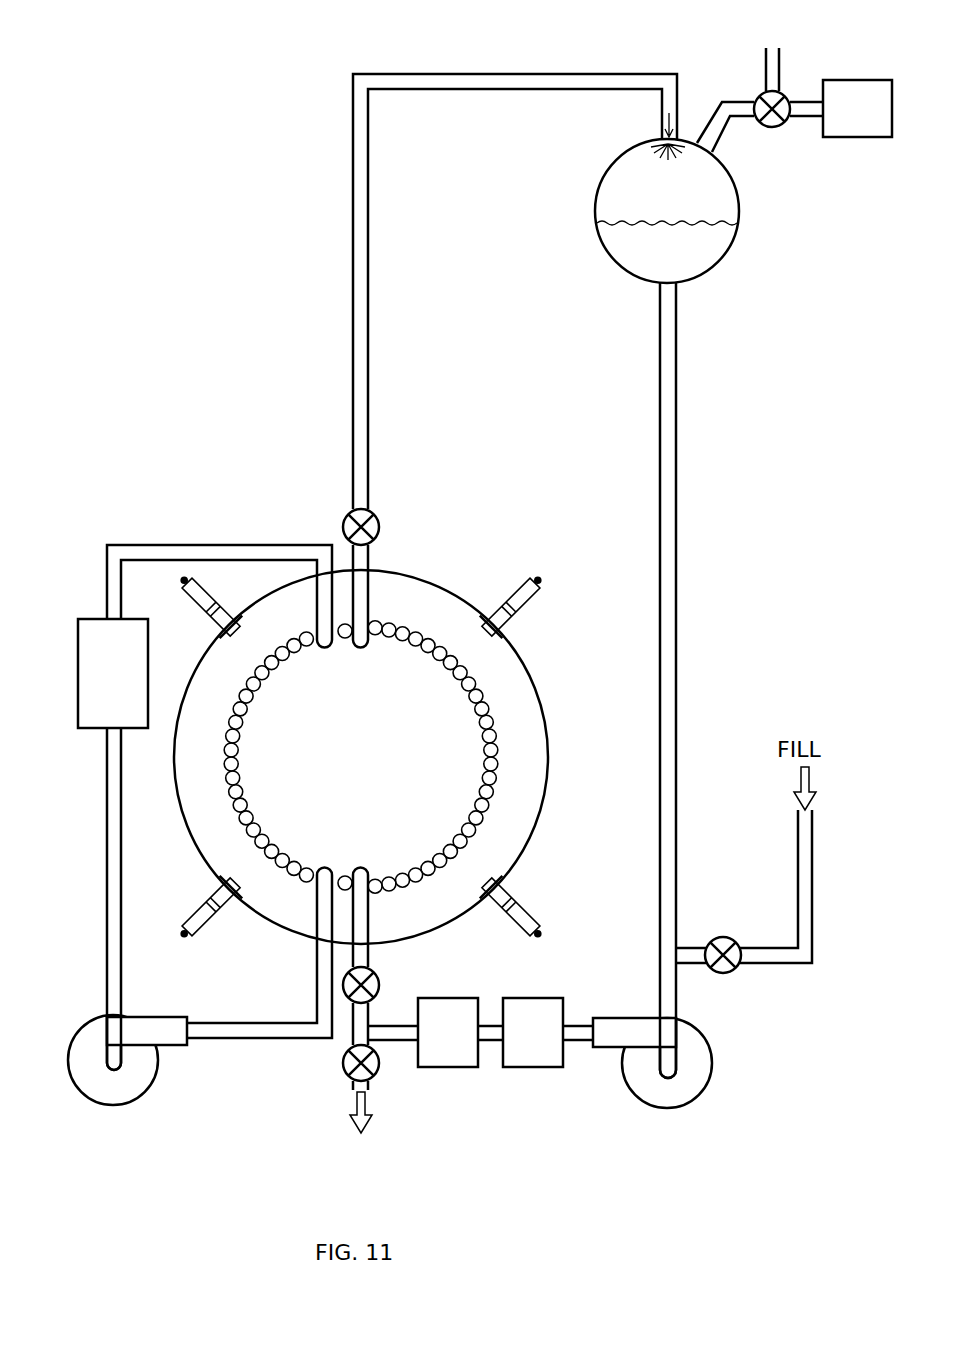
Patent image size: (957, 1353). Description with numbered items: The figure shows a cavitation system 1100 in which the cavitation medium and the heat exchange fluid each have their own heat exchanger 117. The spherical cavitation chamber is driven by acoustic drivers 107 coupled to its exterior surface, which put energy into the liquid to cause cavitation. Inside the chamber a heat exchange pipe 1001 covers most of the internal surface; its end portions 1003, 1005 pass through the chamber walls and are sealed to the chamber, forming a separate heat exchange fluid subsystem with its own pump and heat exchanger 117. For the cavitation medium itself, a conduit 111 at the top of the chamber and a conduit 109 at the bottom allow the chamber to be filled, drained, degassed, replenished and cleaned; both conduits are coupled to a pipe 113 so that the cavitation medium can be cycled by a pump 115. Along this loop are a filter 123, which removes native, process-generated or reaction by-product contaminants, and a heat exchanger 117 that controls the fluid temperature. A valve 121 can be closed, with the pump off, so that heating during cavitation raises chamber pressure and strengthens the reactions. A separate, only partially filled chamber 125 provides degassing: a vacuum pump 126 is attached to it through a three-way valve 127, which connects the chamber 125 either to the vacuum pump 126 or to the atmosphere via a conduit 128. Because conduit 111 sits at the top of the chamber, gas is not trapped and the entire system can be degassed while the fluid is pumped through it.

The system 1100 is at (361, 588).
The heat exchange pipe 1001 is at (262, 705).
The acoustic drivers 107 is at (540, 636).
The heat exchange pipe end portion 1003 is at (320, 607).
The heat exchanger 117 is at (278, 844).
The conduit 111 is at (367, 603).
The valve 121 is at (379, 528).
The pipe 113 is at (368, 186).
The chamber 125 is at (575, 250).
The three-way valve 127 is at (775, 128).
The conduit 128 is at (774, 33).
The vacuum pump 126 is at (857, 108).
The heat exchange pipe end portion 1005 is at (325, 908).
The conduit 109 is at (372, 905).
The filter 123 is at (533, 1032).
The pump 115 is at (703, 1090).